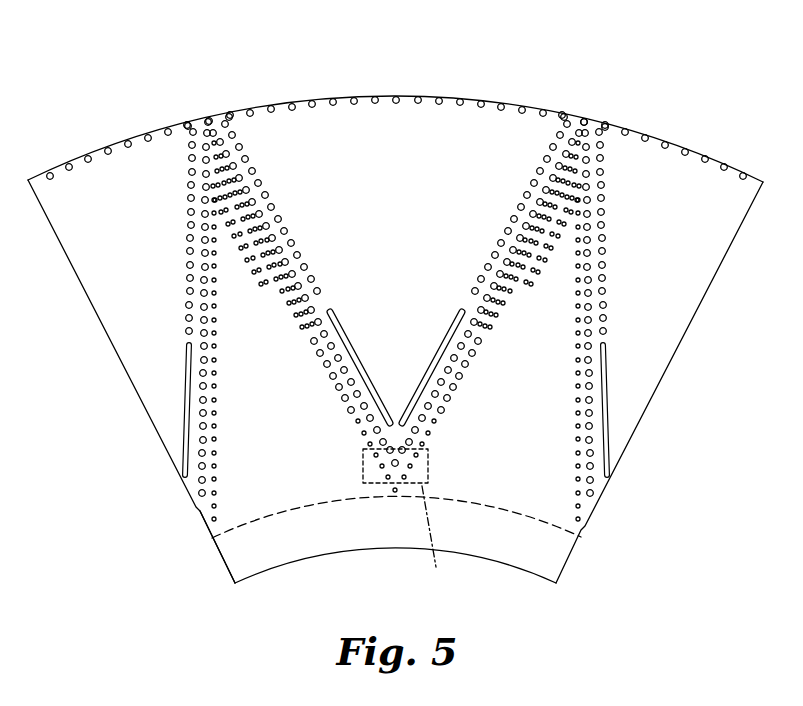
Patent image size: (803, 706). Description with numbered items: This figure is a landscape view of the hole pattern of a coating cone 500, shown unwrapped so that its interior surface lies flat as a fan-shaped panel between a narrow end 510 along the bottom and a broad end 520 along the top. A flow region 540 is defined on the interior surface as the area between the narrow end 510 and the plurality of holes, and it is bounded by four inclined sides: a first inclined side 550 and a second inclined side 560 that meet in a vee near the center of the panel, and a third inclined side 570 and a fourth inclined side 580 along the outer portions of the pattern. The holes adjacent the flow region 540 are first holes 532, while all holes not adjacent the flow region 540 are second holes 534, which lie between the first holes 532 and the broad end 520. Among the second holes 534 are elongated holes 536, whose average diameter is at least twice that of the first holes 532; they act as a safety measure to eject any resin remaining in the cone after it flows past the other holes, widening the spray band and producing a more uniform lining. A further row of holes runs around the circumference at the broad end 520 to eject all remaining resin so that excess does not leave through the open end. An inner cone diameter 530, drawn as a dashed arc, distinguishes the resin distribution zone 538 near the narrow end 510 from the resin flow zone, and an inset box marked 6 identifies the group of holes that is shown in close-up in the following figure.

The cone 500 is at (122, 87).
The narrow end 510 is at (502, 563).
The broad end 520 is at (657, 130).
The inner cone diameter 530 is at (565, 532).
The first holes 532 is at (492, 309).
The second holes 534 is at (525, 193).
The elongated holes 536 is at (402, 351).
The resin distribution zone 538 is at (263, 548).
The flow region 540 is at (486, 482).
The first inclined side 550 is at (325, 355).
The second inclined side 560 is at (467, 360).
The third inclined side 570 is at (578, 403).
The fourth inclined side 580 is at (215, 427).
The section line for FIG. 6 is at (401, 526).